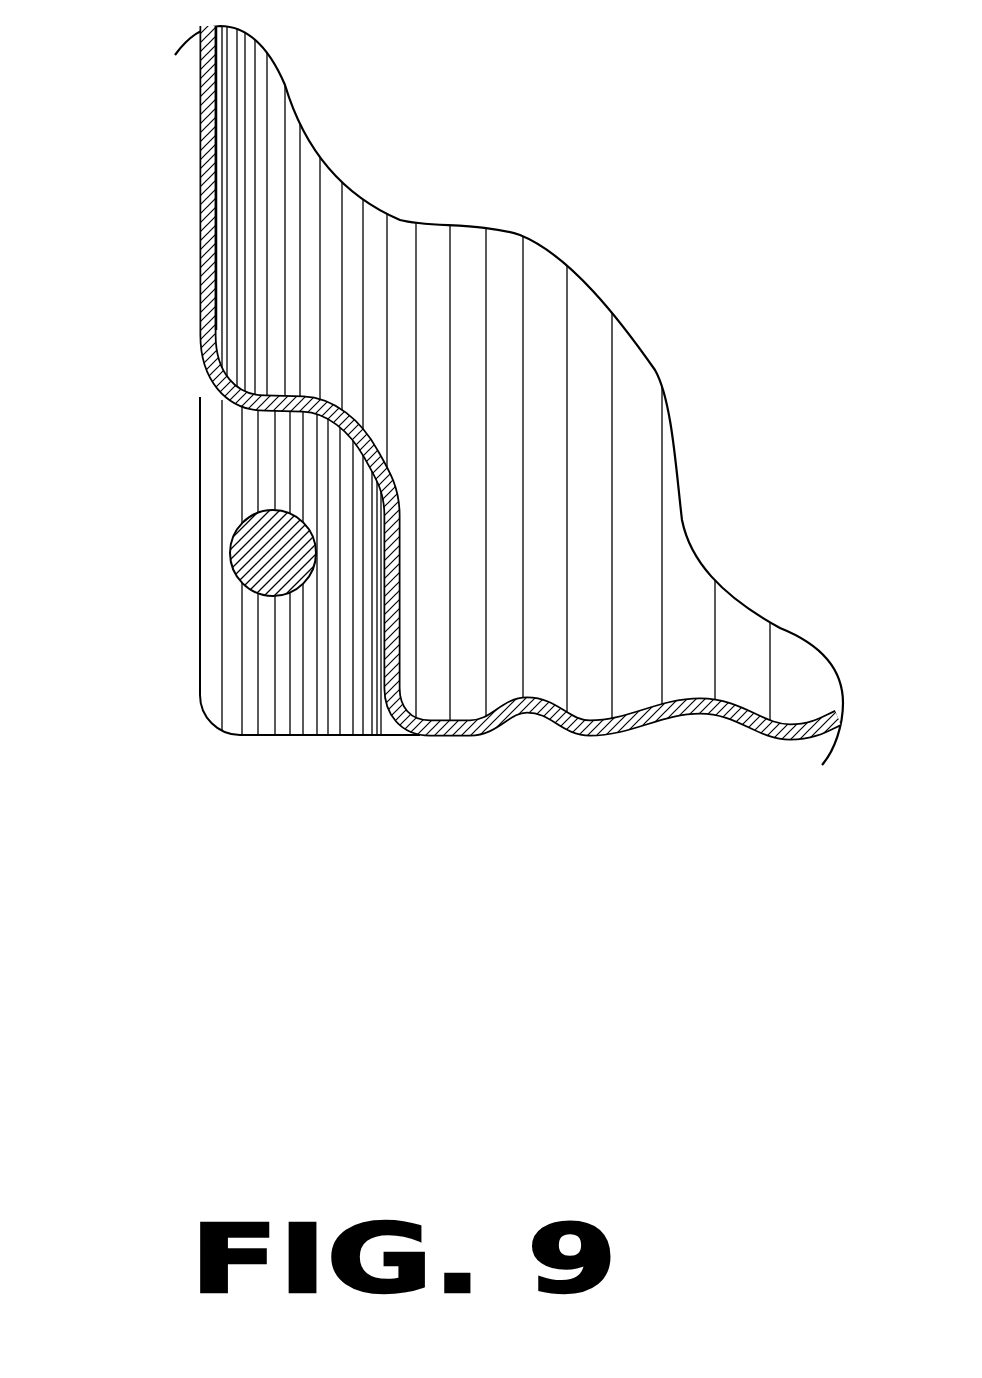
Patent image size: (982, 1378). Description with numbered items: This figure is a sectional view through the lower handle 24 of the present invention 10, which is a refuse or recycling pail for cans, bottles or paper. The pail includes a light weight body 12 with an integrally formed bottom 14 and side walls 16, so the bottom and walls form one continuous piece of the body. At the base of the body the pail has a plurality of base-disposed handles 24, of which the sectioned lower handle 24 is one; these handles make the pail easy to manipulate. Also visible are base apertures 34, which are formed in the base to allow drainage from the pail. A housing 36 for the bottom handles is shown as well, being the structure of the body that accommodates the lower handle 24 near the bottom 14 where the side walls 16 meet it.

The present invention 10 is at (673, 313).
The light weight body 12 is at (585, 300).
The bottom 14 is at (383, 736).
The side walls 16 is at (208, 172).
The lower handle 24 is at (232, 557).
The base apertures 34 is at (793, 743).
The housing 36 is at (370, 423).